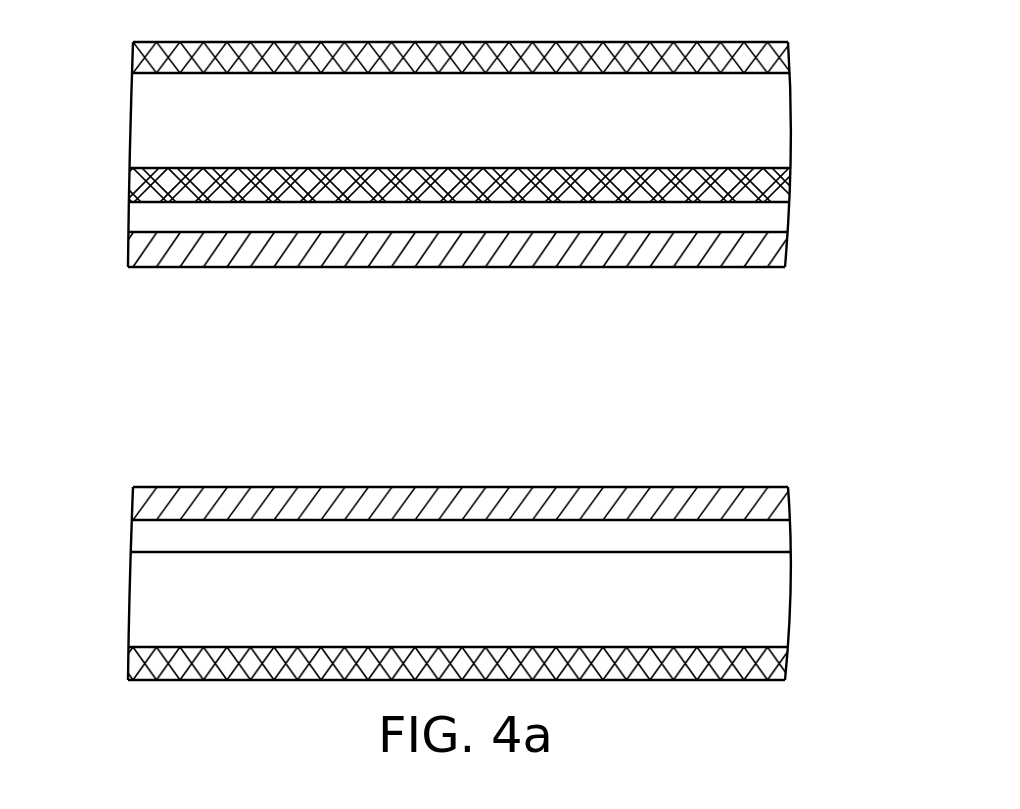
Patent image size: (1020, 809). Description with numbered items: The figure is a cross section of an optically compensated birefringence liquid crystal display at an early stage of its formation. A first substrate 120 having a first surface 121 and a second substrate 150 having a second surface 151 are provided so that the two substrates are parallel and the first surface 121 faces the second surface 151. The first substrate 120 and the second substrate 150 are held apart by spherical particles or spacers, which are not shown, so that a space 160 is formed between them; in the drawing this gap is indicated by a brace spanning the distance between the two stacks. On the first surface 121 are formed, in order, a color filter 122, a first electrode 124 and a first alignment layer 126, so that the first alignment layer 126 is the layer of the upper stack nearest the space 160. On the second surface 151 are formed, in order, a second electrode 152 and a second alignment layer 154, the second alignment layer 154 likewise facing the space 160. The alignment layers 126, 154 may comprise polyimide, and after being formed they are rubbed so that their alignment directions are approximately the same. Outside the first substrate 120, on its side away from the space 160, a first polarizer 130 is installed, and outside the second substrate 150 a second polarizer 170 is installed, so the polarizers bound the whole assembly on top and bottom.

The first polarizer 130 is at (770, 55).
The first substrate 120 is at (768, 120).
The first surface 121 is at (757, 168).
The color filter 122 is at (768, 185).
The first electrode 124 is at (768, 215).
The first alignment layer 126 is at (768, 250).
The space 160 is at (107, 264).
The second alignment layer 154 is at (768, 503).
The second electrode 152 is at (768, 534).
The second surface 151 is at (758, 552).
The second substrate 150 is at (768, 598).
The second polarizer 170 is at (768, 662).